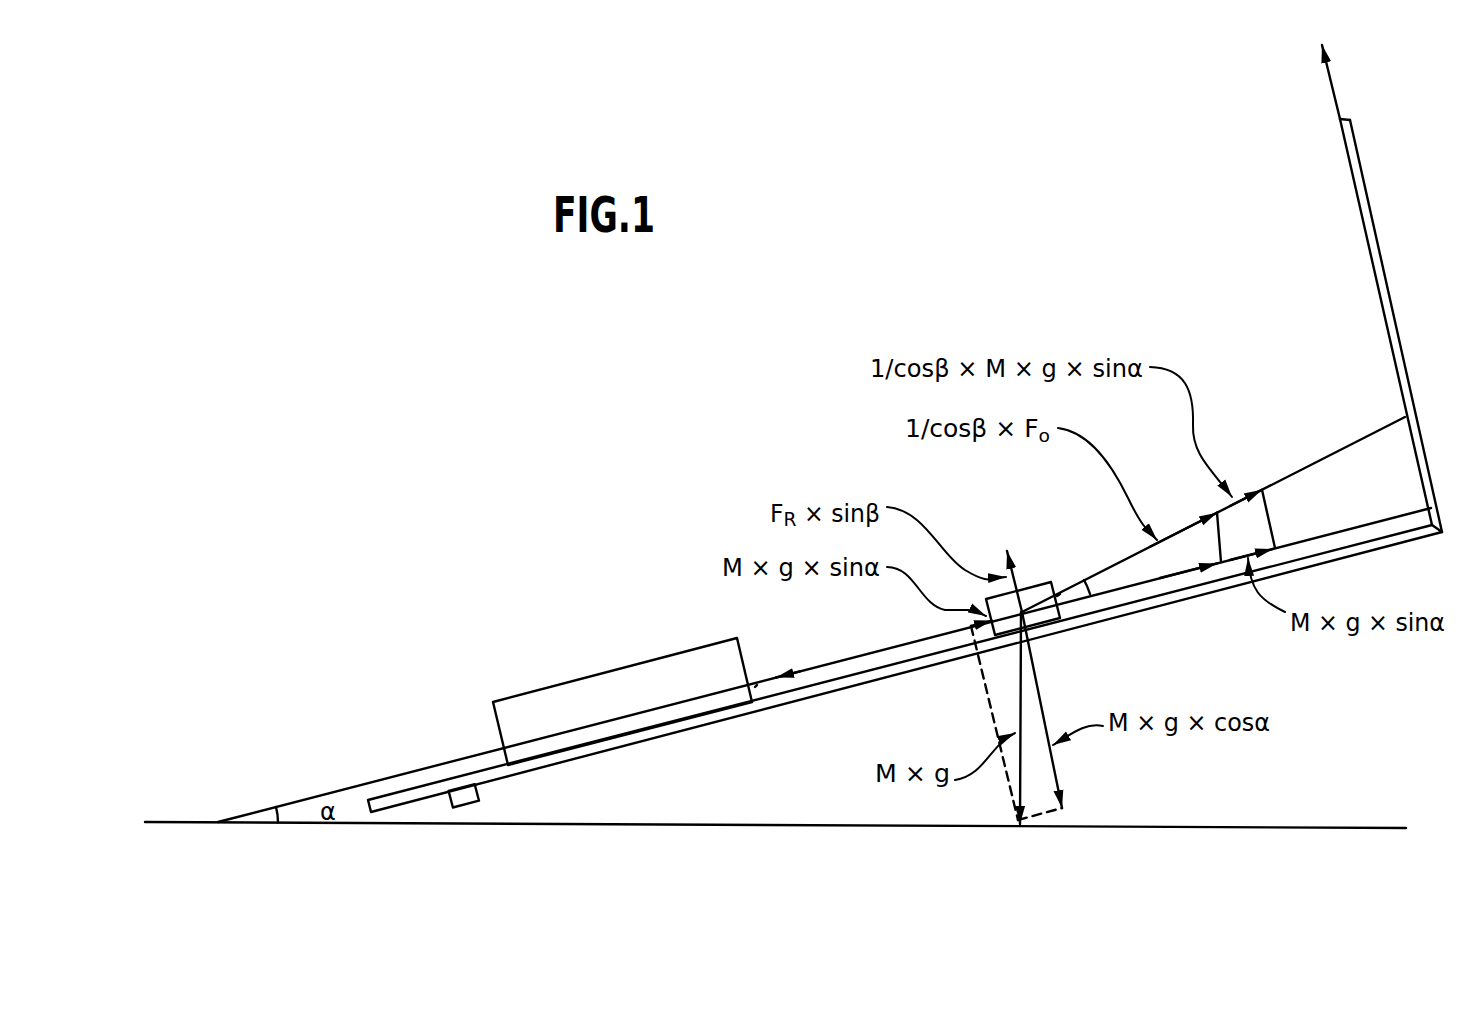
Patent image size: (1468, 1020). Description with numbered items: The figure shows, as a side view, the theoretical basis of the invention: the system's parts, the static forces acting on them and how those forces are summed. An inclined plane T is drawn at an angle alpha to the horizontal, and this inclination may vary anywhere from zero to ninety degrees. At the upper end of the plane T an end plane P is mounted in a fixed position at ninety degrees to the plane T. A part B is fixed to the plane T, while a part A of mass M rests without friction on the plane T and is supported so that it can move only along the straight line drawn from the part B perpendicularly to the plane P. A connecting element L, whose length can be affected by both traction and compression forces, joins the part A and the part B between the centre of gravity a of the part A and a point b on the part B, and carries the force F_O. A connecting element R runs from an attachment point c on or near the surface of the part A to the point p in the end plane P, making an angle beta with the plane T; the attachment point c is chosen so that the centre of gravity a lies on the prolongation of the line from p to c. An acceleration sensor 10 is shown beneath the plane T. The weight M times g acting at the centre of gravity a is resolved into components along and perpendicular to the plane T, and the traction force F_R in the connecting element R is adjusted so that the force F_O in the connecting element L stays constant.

The acceleration sensor 10 is at (462, 806).
The plane P is at (1373, 238).
The connecting element R is at (1315, 462).
The part A is at (1033, 590).
The part B is at (537, 703).
The plane T is at (622, 740).
The connecting element L is at (855, 658).
The centre of gravity a is at (1024, 614).
The point b is at (756, 687).
The attachment point c is at (1057, 596).